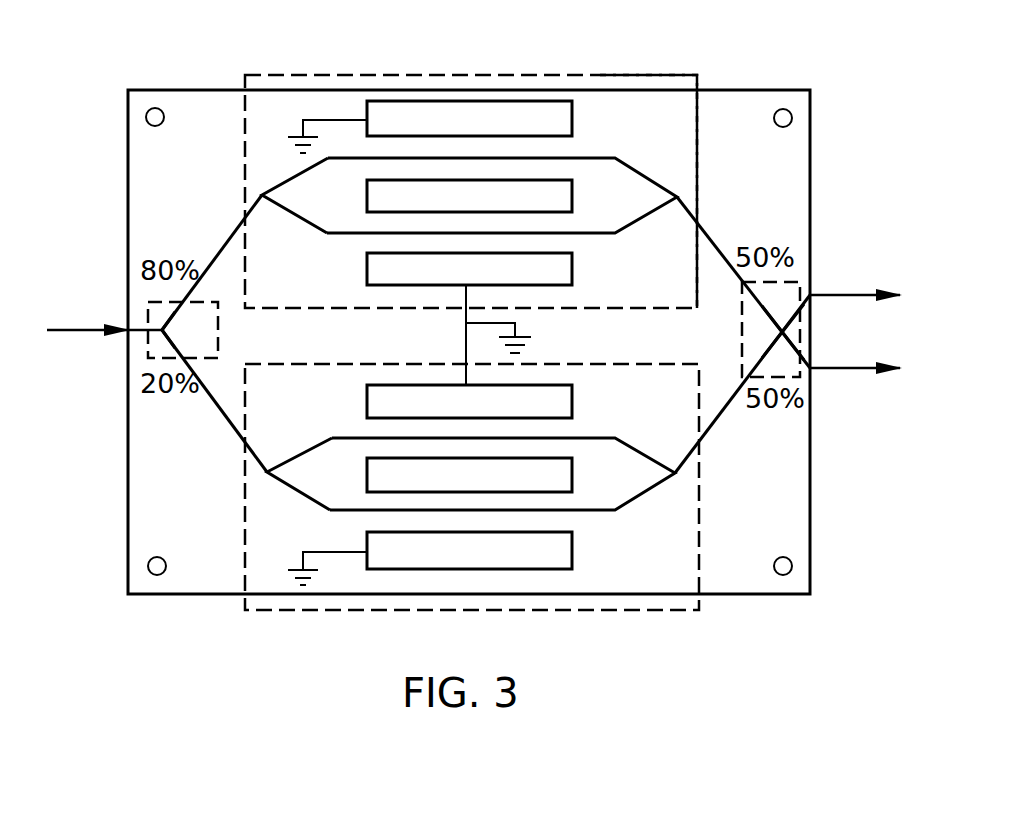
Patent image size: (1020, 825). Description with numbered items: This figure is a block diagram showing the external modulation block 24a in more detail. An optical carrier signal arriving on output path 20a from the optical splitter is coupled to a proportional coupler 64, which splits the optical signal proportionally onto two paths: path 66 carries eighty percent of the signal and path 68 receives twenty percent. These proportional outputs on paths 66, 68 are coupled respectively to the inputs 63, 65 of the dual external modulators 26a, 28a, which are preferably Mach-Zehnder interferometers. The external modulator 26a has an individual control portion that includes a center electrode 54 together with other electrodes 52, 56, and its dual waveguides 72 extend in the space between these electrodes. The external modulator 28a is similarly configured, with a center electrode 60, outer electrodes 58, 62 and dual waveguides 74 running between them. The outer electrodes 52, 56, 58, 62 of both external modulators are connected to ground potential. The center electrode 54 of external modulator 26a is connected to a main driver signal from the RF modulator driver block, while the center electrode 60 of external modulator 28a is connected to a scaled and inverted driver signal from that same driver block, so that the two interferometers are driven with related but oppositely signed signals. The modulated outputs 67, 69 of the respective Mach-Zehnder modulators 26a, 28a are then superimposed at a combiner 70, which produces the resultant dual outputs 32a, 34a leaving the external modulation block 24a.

The output path 20a is at (80, 328).
The external modulation block 24a is at (476, 68).
The external modulator 26a is at (646, 73).
The external modulator 28a is at (648, 613).
The dual output 32a is at (845, 294).
The dual output 34a is at (843, 370).
The electrode 52 is at (573, 120).
The center electrode 54 is at (573, 196).
The electrode 56 is at (573, 268).
The outer electrode 58 is at (573, 402).
The center electrode 60 is at (573, 475).
The outer electrode 62 is at (573, 552).
The input 63 is at (263, 197).
The proportional coupler 64 is at (143, 350).
The input 65 is at (267, 475).
The path 66 is at (226, 244).
The modulated output 67 is at (710, 238).
The path 68 is at (220, 408).
The modulated output 69 is at (718, 418).
The combiner 70 is at (803, 330).
The dual waveguides 72 is at (342, 160).
The dual waveguides 74 is at (313, 508).